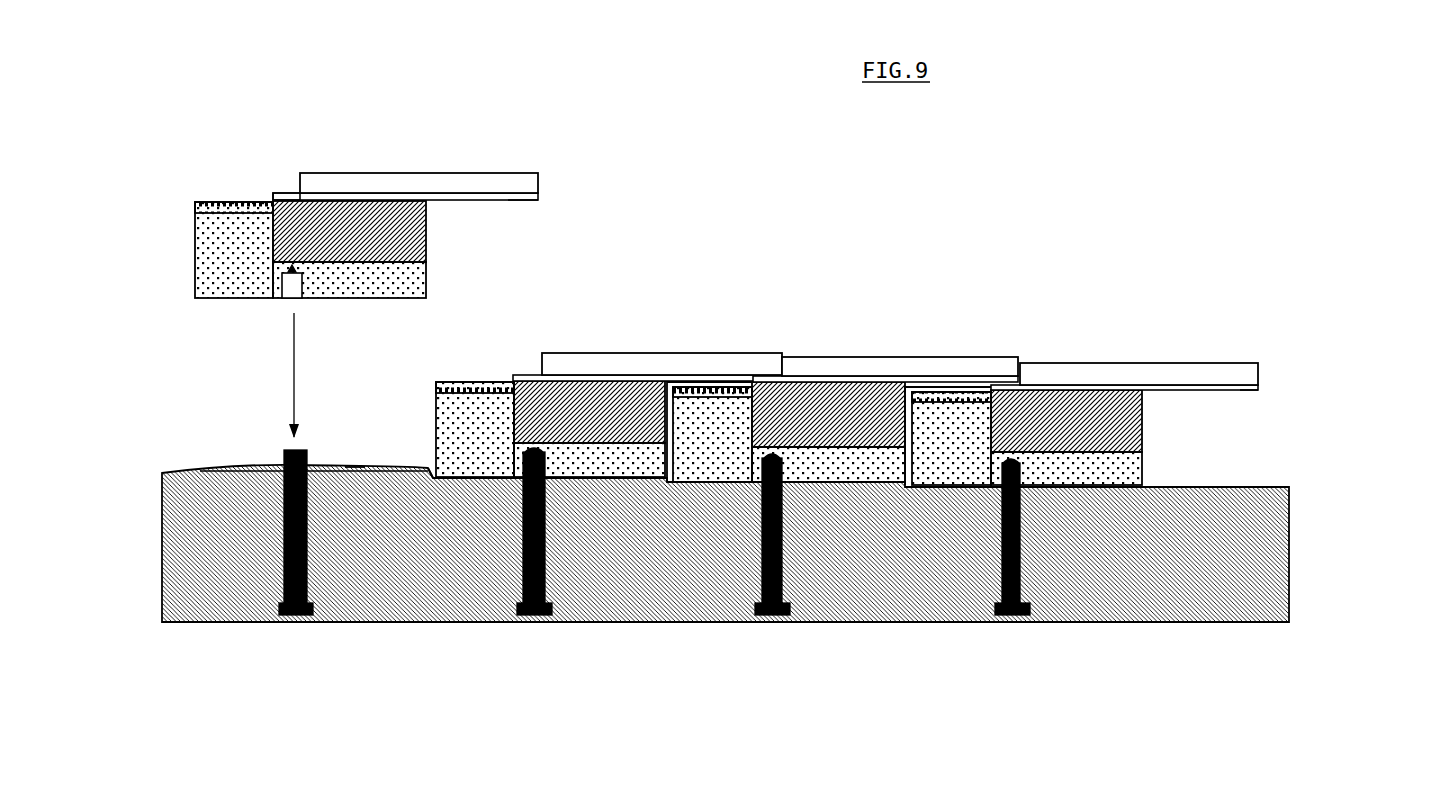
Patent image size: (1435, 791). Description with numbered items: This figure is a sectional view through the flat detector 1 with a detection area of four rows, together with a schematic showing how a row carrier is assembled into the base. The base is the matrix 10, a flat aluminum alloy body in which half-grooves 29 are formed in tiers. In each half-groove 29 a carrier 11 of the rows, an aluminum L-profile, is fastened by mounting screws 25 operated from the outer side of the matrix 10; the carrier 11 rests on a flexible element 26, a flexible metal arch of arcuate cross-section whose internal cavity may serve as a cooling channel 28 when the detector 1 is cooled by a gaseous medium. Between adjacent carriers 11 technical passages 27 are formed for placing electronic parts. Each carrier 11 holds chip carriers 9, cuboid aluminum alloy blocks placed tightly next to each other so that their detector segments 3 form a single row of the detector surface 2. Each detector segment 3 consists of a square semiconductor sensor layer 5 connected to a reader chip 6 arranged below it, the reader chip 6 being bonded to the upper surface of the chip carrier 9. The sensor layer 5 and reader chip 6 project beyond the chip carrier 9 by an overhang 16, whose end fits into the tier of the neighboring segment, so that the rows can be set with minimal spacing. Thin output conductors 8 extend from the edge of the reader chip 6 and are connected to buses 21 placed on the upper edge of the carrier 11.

The detector 1 is at (853, 318).
The detector surface 2 is at (1003, 337).
The detector segment 3 is at (478, 143).
The sensor layer 5 is at (532, 186).
The reader chip 6 is at (523, 202).
The output conductor 8 is at (268, 197).
The chip carrier 9 is at (427, 240).
The matrix 10 is at (658, 600).
The carrier of rows 11 is at (427, 288).
The overhang 16 is at (515, 210).
The bus 21 is at (465, 382).
The mounting screw 25 is at (283, 580).
The flexible element 26 is at (359, 466).
The technical passage 27 is at (208, 202).
The cooling channel 28 is at (353, 467).
The half-groove 29 is at (432, 478).